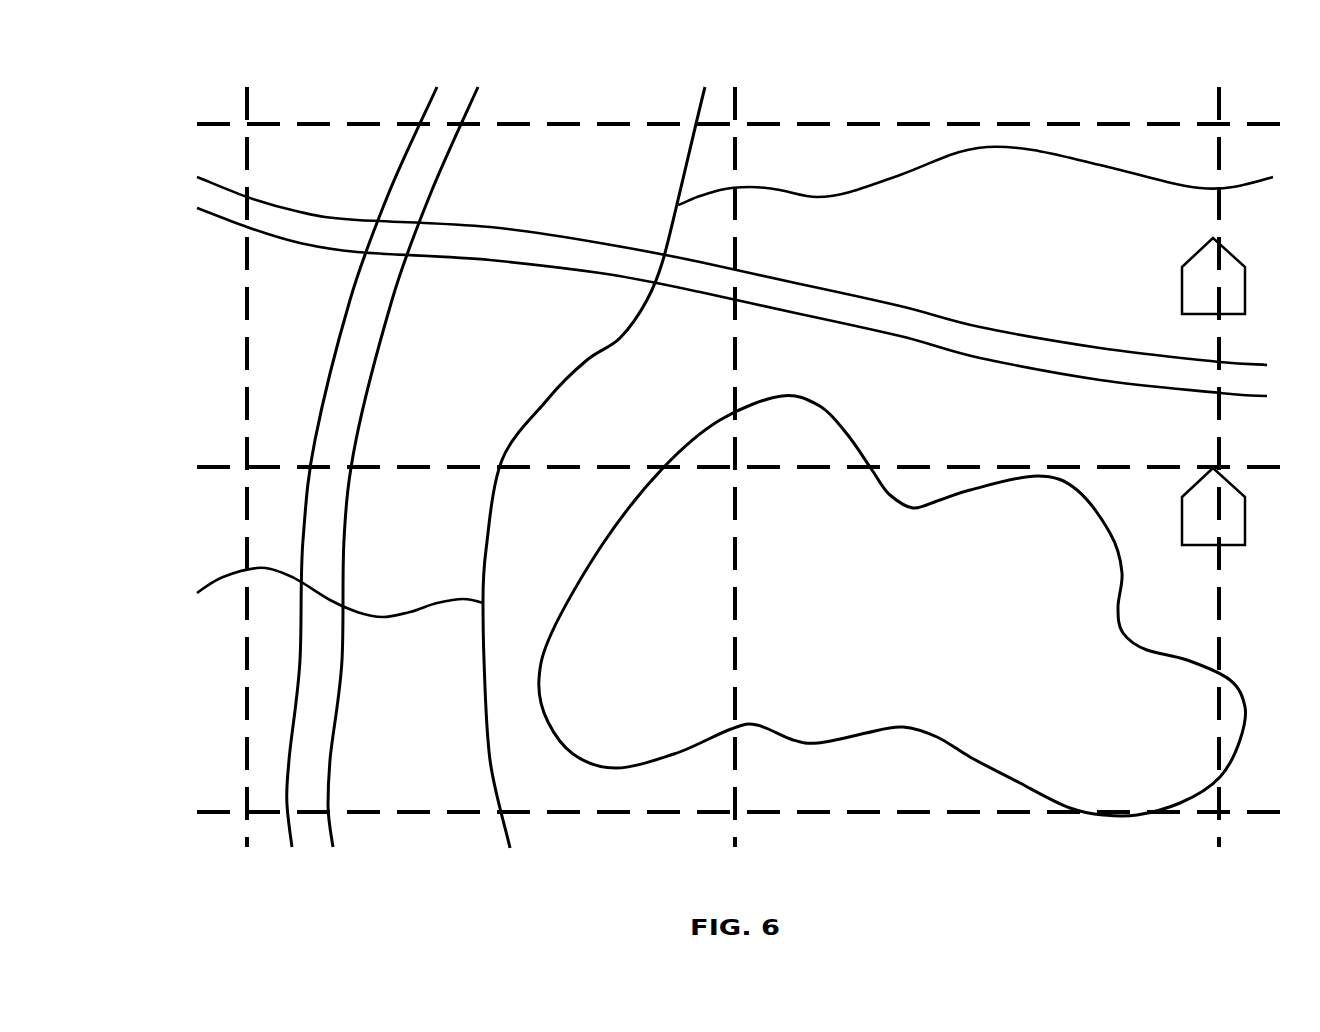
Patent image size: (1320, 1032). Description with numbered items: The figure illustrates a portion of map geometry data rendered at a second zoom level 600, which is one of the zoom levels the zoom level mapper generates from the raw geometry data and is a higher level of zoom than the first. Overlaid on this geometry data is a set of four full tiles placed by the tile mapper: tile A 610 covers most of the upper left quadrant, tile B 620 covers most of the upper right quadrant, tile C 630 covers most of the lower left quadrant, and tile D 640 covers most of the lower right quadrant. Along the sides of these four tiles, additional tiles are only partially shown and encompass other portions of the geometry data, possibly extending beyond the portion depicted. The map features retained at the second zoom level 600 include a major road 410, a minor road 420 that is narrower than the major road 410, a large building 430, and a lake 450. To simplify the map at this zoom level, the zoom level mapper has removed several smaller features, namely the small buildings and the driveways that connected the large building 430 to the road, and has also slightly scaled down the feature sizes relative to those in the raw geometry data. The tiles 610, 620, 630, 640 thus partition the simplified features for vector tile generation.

The second zoom level 600 is at (912, 37).
The zoom level 2, tile A 610 is at (614, 79).
The zoom level 2, tile B 620 is at (1102, 99).
The zoom level 2, tile C 630 is at (614, 876).
The zoom level 2, tile D 640 is at (1102, 872).
The major road 410 is at (389, 196).
The minor road 420 is at (576, 368).
The large building 430 is at (1182, 287).
The lake 450 is at (928, 736).